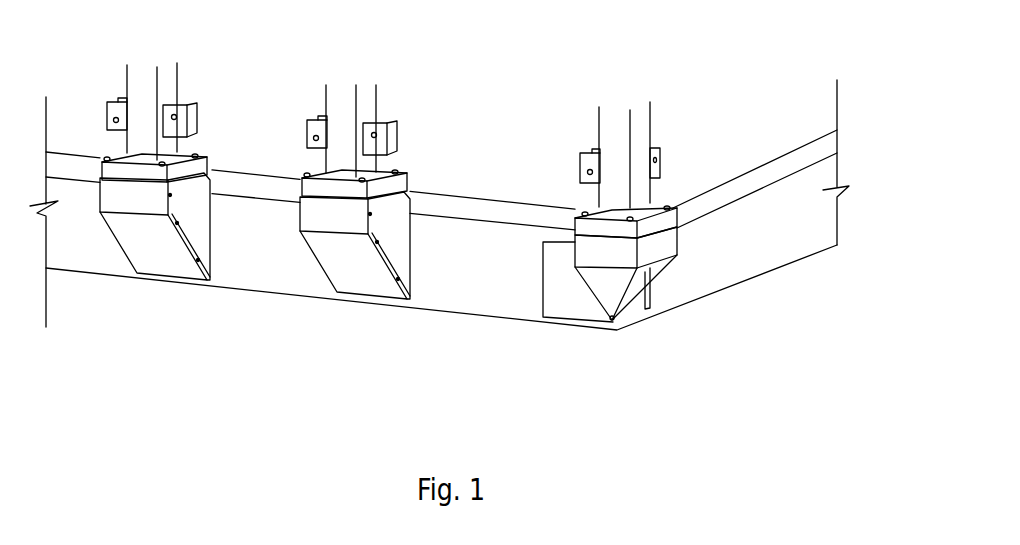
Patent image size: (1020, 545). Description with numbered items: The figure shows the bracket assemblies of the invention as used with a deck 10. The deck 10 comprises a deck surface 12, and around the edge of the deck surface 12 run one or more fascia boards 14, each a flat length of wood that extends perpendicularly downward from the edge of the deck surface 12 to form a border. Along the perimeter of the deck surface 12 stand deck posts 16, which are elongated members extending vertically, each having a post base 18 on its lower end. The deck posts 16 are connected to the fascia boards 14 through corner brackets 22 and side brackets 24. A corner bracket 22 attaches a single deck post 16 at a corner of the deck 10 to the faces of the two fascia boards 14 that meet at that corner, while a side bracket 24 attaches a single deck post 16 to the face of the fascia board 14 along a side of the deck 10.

The deck 10 is at (520, 90).
The deck surface 12 is at (514, 173).
The fascia board 14 is at (485, 302).
The deck post 16 is at (168, 82).
The post base 18 is at (197, 165).
The corner bracket 22 is at (617, 283).
The side bracket 24 is at (152, 257).